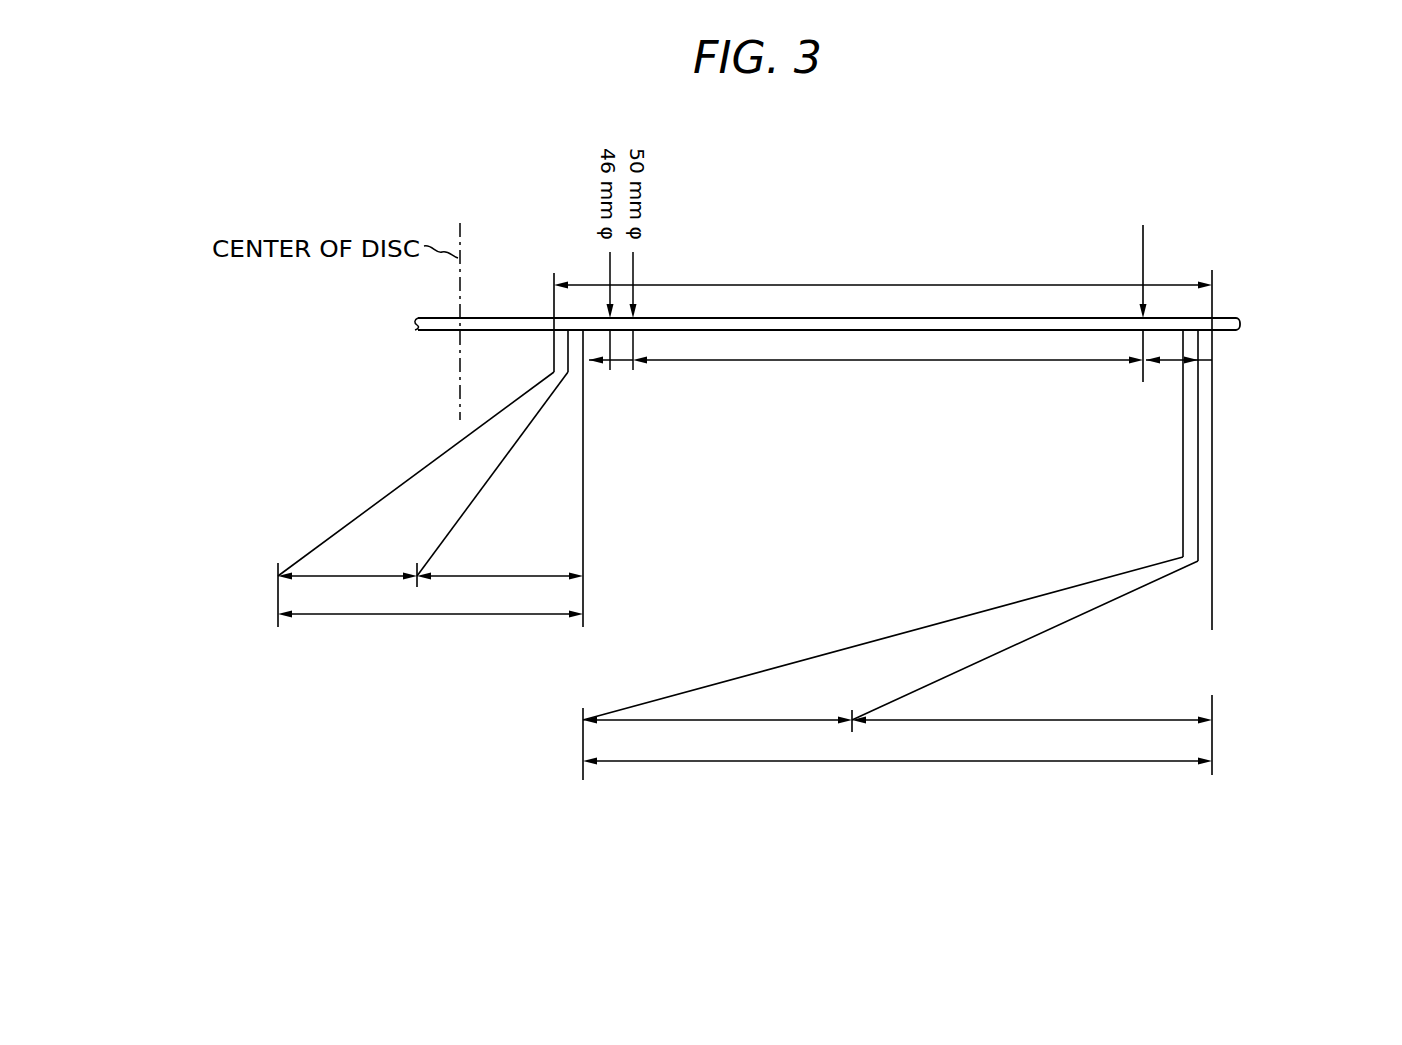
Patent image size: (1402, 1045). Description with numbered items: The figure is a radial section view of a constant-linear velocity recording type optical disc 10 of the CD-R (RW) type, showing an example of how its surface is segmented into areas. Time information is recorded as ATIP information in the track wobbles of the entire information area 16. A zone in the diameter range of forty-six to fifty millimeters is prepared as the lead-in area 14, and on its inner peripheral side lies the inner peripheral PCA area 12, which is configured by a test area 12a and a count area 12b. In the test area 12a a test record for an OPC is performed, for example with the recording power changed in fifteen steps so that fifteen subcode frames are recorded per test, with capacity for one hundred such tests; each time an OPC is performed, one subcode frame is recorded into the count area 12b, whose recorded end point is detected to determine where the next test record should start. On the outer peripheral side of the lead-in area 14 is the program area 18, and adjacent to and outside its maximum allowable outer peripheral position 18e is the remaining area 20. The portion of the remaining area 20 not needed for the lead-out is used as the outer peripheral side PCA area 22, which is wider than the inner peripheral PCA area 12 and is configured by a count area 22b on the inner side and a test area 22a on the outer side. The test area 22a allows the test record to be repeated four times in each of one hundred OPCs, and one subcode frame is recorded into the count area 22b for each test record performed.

The optical disc 10 is at (1232, 318).
The inner peripheral PCA area 12 is at (355, 616).
The test area 12a is at (357, 574).
The count area 12b is at (508, 573).
The lead-in area 14 is at (622, 362).
The information area 16 is at (801, 285).
The program area 18 is at (850, 361).
The maximum allowable outer peripheral position 18e is at (1155, 292).
The remaining area 20 is at (1170, 362).
The outer peripheral side PCA area 22 is at (790, 763).
The test area 22a is at (1025, 718).
The count area 22b is at (705, 718).